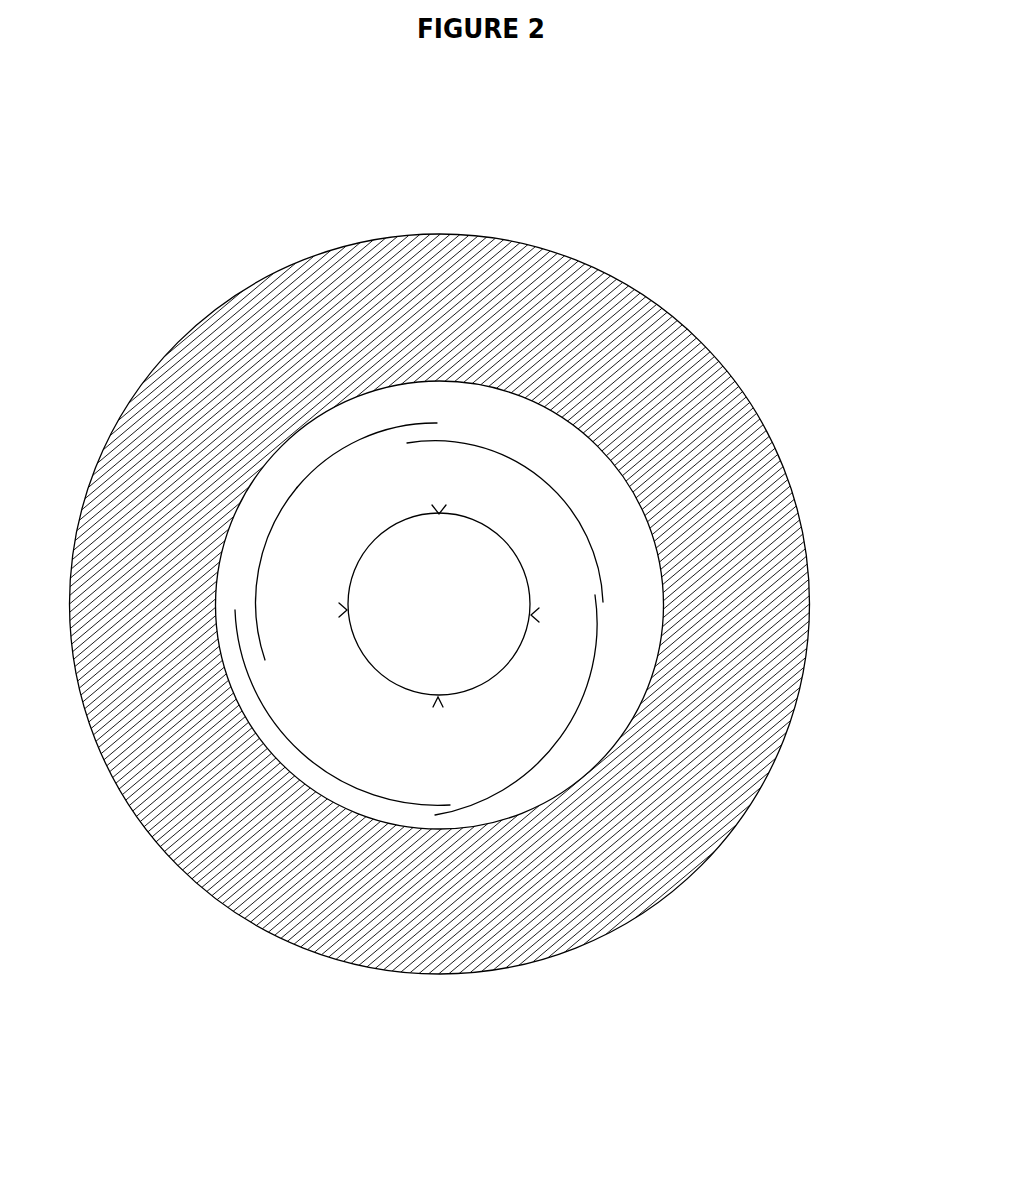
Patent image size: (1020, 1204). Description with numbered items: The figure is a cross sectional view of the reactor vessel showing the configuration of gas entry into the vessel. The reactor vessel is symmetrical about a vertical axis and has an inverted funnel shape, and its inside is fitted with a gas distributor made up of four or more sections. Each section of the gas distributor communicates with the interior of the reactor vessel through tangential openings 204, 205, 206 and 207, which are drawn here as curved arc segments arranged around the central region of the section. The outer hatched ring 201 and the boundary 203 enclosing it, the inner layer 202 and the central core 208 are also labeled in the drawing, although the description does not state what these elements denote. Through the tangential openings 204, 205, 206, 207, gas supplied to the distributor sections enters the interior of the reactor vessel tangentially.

The outer housing wall 201 is at (719, 345).
The inner layer 202 is at (624, 535).
The housing inner boundary 203 is at (674, 593).
The tangential opening 204 is at (636, 662).
The tangential opening 205 is at (376, 791).
The tangential opening 206 is at (252, 647).
The tangential opening 207 is at (410, 413).
The inner core 208 is at (484, 701).